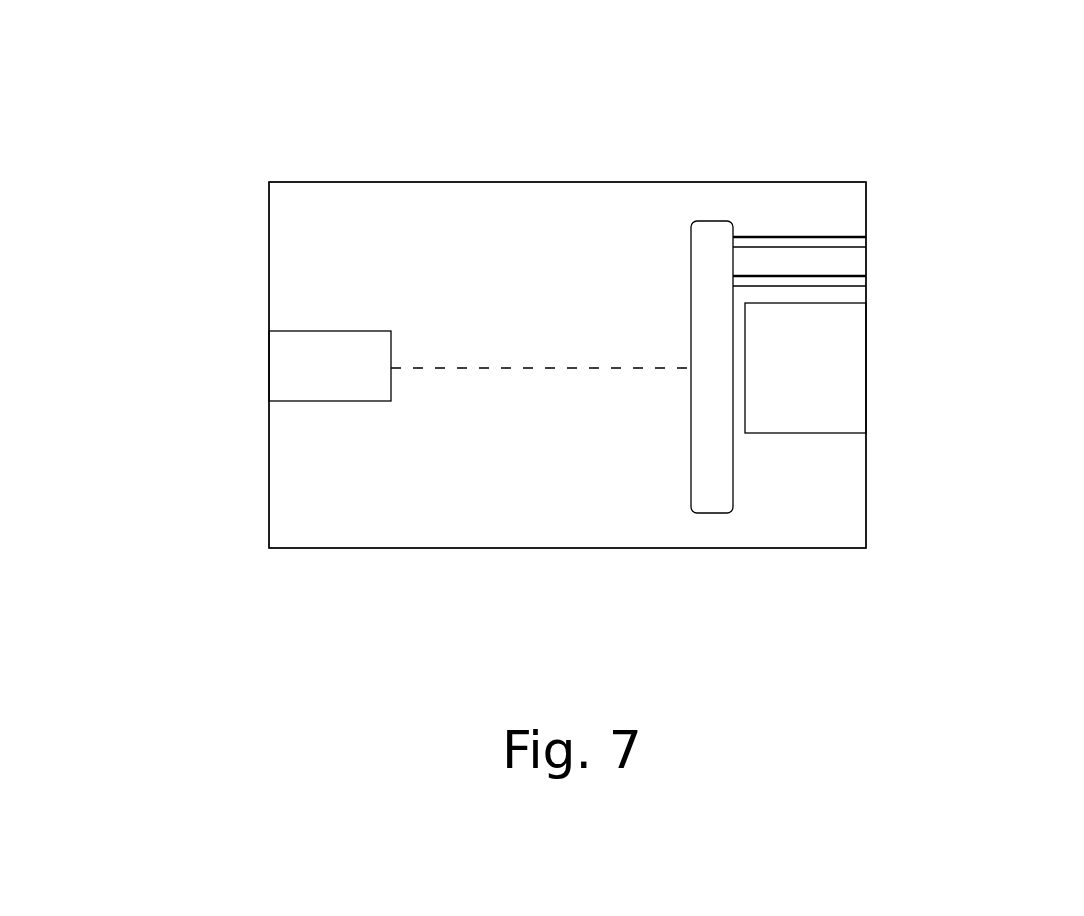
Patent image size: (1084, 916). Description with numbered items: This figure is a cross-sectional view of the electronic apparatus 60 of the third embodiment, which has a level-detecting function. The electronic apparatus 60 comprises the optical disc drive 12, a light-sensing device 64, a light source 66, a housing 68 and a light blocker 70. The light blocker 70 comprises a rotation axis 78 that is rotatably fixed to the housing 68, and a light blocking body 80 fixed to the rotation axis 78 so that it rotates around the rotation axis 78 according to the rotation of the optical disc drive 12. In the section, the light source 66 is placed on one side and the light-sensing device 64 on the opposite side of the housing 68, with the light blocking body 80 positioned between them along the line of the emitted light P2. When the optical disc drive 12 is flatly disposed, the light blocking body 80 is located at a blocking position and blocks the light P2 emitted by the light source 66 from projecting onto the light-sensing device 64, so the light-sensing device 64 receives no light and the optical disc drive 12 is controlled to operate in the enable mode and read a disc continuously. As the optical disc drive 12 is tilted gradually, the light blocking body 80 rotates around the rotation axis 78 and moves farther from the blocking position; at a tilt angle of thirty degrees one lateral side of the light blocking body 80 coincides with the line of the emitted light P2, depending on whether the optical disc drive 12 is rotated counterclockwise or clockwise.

The electronic apparatus 60 is at (200, 83).
The optical disc drive 12 is at (345, 181).
The light source 66 is at (287, 363).
The light P2 is at (490, 372).
The light blocker 70 is at (705, 252).
The light blocking body 80 is at (695, 197).
The rotation axis 78 is at (800, 263).
The light-sensing device 64 is at (853, 347).
The housing 68 is at (826, 507).